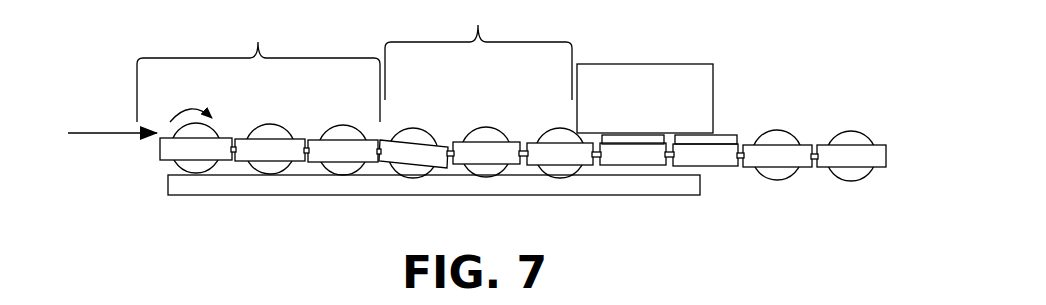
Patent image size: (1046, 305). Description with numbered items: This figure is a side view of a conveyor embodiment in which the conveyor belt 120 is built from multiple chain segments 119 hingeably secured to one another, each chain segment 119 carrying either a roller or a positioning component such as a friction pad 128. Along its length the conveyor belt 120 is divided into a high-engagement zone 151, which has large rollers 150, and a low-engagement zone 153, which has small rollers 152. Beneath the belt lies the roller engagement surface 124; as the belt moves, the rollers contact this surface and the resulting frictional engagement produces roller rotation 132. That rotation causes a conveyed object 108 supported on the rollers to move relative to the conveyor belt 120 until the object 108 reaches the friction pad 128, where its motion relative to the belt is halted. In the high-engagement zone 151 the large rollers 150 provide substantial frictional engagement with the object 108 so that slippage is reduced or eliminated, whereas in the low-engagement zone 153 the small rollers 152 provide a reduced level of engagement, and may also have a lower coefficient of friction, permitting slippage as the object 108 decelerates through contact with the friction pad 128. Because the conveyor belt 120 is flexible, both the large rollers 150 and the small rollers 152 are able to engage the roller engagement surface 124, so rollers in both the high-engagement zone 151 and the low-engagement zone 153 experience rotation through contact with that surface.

The object 108 is at (602, 62).
The chain segment 119 is at (881, 170).
The conveyor belt 120 is at (880, 118).
The roller engagement surface 124 is at (693, 197).
The friction pad 128 is at (727, 132).
The roller rotation 132 is at (182, 100).
The large roller 150 is at (273, 122).
The high-engagement zone 151 is at (258, 65).
The small roller 152 is at (405, 132).
The low-engagement zone 153 is at (478, 50).